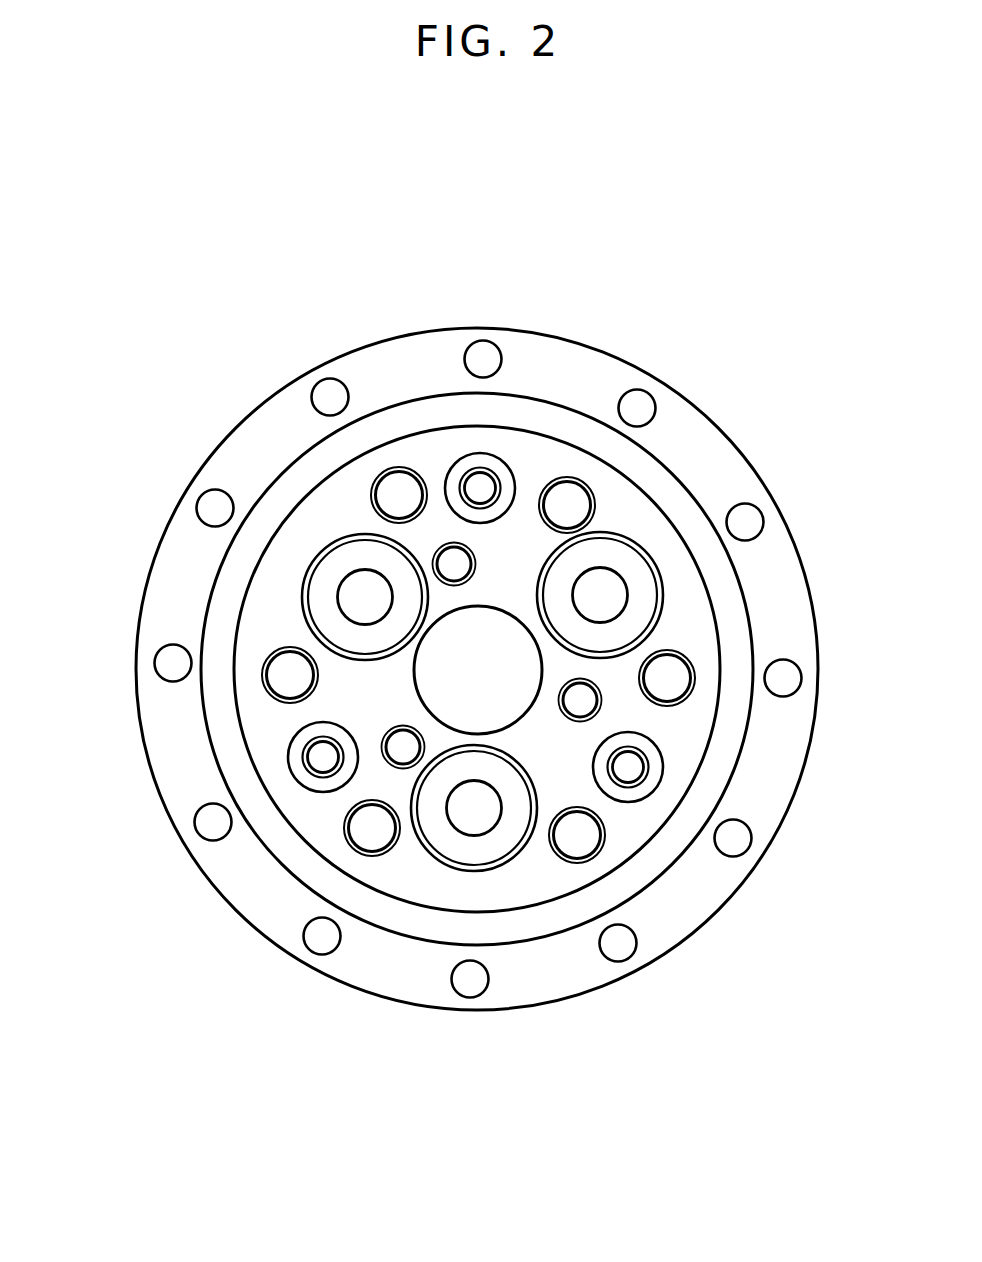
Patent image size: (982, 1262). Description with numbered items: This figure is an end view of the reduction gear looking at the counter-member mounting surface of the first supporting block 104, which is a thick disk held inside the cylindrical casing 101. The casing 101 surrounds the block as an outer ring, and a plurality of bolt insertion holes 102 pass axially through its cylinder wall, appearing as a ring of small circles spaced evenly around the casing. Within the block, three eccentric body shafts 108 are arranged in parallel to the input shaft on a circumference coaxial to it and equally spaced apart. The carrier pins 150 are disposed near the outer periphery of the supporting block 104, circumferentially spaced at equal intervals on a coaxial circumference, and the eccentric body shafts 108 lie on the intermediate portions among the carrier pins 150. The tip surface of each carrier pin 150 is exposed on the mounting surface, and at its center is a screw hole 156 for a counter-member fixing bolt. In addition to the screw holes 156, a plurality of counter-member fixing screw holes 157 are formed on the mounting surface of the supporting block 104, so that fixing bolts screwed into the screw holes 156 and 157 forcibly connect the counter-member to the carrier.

The cylindrical casing 101 is at (477, 602).
The bolt insertion holes 102 is at (478, 645).
The first supporting block 104 is at (397, 669).
The eccentric body shafts 108 is at (433, 720).
The carrier pins 150 is at (440, 662).
The screw hole 156 is at (453, 563).
The counter-member fixing screw holes 157 is at (556, 777).